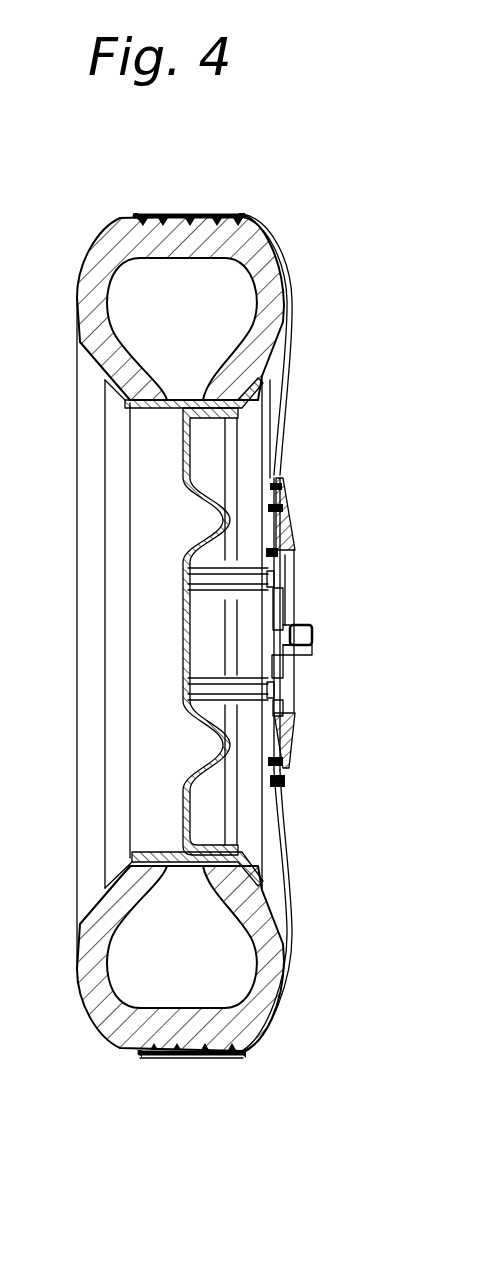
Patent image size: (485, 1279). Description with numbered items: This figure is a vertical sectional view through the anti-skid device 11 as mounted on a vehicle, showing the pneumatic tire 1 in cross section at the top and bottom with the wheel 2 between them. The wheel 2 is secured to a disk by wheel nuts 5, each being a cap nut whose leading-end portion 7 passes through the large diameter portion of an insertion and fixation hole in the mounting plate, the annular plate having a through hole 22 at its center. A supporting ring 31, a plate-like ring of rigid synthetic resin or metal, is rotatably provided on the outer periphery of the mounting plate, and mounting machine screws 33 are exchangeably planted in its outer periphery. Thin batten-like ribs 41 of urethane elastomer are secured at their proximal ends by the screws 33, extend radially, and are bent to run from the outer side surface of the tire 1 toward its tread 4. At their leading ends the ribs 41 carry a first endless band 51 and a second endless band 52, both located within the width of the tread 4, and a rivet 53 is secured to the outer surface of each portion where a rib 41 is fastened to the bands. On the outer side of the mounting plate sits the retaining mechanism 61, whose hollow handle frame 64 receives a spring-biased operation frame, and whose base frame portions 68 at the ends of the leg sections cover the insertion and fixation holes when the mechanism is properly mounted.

The pneumatic tire 1 is at (287, 300).
The wheel 2 is at (190, 438).
The tread 4 is at (185, 215).
The wheel nut 5 is at (194, 580).
The leading-end portion 7 is at (281, 580).
The anti-skid device 11 is at (284, 638).
The through hole 22 is at (284, 667).
The supporting ring 31 is at (298, 532).
The mounting machine screw 33 is at (278, 507).
The rib 41 is at (285, 396).
The first endless band 51 is at (136, 216).
The second endless band 52 is at (244, 216).
The rivet 53 is at (152, 216).
The retaining mechanism 61 is at (313, 636).
The handle frame 64 is at (313, 651).
The base frame portion 68 is at (280, 612).